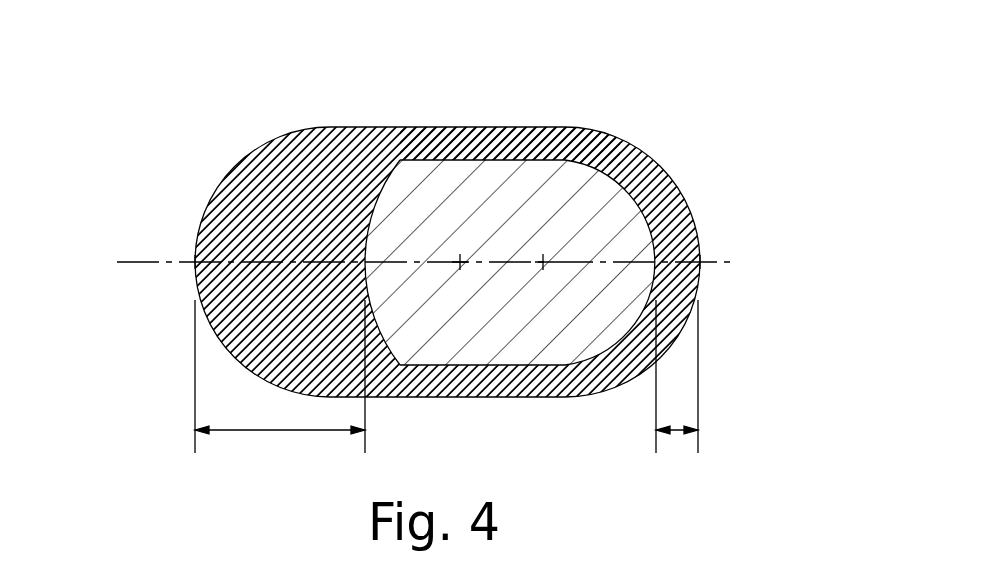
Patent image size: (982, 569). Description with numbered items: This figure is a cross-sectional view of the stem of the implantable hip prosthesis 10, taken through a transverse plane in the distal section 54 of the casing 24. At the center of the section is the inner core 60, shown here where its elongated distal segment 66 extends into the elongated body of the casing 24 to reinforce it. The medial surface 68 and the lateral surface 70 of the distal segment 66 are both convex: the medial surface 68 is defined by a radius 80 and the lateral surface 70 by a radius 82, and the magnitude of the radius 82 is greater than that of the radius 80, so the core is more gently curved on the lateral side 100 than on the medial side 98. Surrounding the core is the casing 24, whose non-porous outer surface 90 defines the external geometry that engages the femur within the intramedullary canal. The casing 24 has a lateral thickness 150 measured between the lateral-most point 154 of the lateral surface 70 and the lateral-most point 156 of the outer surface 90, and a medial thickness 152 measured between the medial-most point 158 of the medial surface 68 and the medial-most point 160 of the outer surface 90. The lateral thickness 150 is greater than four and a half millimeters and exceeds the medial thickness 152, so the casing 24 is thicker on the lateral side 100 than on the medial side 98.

The prosthesis 10 is at (762, 92).
The lateral side 100 is at (170, 177).
The medial side 98 is at (713, 210).
The radius 82 is at (260, 148).
The radius 80 is at (640, 190).
The outer surface 90 is at (251, 152).
The lateral surface 70 is at (384, 158).
The distal section 54 is at (447, 128).
The distal segment 66 is at (483, 165).
The inner core 60 is at (543, 150).
The casing 24 is at (590, 136).
The medial surface 68 is at (668, 195).
The lateral-most point 156 is at (195, 262).
The lateral-most point 154 is at (366, 262).
The medial-most point 158 is at (655, 262).
The medial-most point 160 is at (700, 262).
The lateral thickness 150 is at (279, 432).
The medial thickness 152 is at (676, 437).